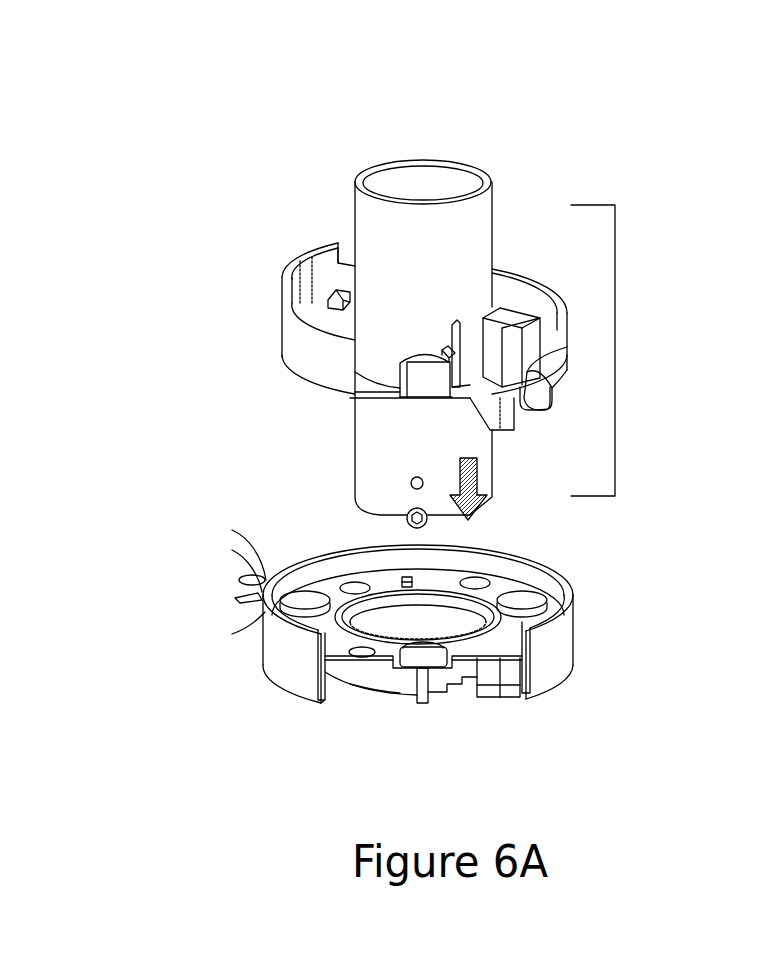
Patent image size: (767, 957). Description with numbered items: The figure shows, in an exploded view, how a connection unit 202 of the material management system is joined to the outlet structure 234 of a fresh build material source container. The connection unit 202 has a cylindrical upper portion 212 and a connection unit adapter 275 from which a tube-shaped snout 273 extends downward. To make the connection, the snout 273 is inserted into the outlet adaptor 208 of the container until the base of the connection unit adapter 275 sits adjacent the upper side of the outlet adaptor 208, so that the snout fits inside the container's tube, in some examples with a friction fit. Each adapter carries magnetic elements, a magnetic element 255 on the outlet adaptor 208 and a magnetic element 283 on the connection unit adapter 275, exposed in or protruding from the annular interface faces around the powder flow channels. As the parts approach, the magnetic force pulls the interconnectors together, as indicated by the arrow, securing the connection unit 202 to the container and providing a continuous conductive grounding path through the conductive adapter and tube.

The connection unit 202 is at (615, 340).
The cylindrical housing 212 is at (366, 213).
The connection unit adapter 275 is at (296, 353).
The magnetic element 283 is at (437, 392).
The tube-shaped snout 273 is at (367, 477).
The outlet adaptor 208 is at (556, 639).
The magnetic element 255 is at (423, 690).
The outlet structure 234 is at (238, 667).